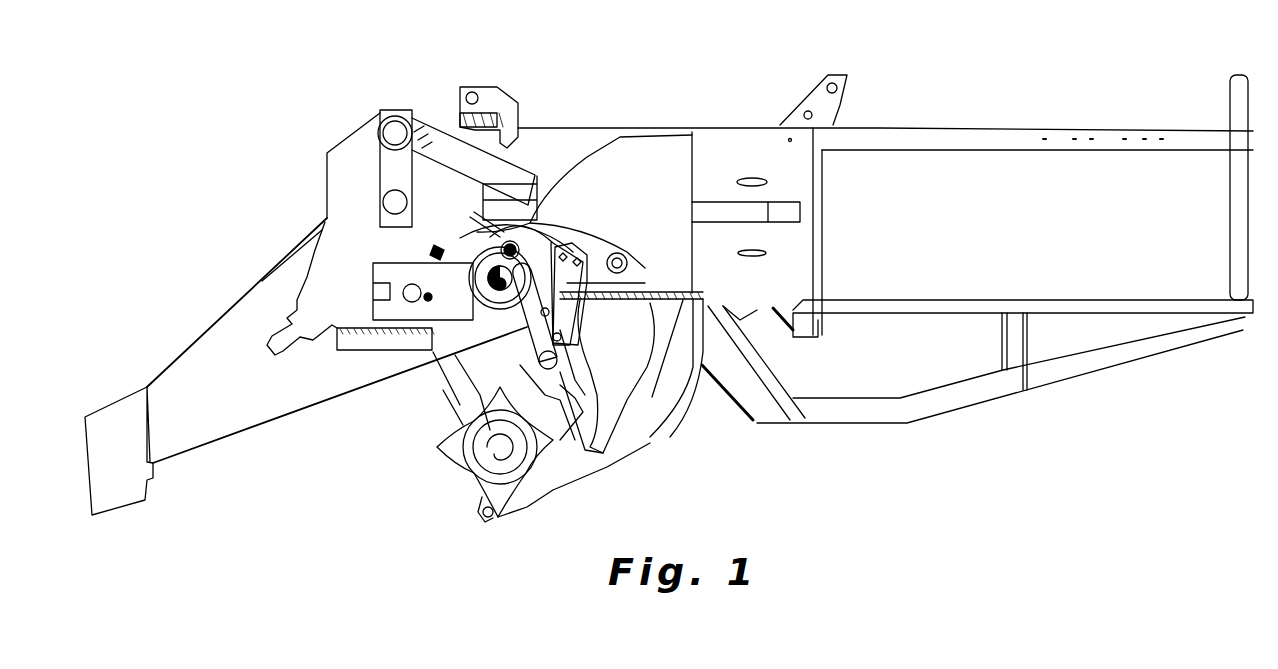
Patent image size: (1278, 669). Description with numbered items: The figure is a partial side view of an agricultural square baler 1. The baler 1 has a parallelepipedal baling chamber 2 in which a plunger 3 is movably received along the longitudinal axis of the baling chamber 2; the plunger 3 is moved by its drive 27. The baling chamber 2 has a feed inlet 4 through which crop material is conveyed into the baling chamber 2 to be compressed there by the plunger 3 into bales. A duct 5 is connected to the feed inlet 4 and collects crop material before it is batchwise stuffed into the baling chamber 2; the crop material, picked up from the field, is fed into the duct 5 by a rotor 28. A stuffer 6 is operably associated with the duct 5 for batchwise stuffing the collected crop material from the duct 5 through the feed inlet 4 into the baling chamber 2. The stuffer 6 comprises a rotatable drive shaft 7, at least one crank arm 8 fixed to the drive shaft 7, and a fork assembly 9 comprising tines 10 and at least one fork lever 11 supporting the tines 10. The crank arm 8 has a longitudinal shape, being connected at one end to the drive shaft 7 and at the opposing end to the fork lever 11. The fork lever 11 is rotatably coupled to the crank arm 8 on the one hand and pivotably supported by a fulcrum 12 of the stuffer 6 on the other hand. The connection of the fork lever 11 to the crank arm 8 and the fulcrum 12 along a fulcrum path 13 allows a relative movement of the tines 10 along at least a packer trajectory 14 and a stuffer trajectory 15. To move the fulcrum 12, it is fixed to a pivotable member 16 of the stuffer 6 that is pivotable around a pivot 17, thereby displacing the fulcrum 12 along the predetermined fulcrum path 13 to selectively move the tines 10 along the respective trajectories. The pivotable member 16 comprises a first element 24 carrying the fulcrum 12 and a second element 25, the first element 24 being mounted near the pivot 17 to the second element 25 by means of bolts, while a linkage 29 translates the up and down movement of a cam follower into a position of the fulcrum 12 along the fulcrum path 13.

The agricultural square baler 1 is at (938, 72).
The baling chamber 2 is at (1055, 112).
The plunger 3 is at (652, 158).
The feed inlet 4 is at (706, 288).
The duct 5 is at (577, 467).
The stuffer 6 is at (593, 336).
The drive shaft 7 is at (520, 262).
The crank arm 8 is at (516, 243).
The fork assembly 9 is at (582, 322).
The tines 10 is at (568, 398).
The fork lever 11 is at (580, 338).
The fulcrum 12 is at (527, 324).
The fulcrum path 13 is at (534, 272).
The packer trajectory 14 is at (677, 368).
The stuffer trajectory 15 is at (684, 410).
The pivotable member 16 is at (602, 250).
The pivot 17 is at (629, 259).
The first element 24 is at (568, 281).
The second element 25 is at (497, 230).
The drive 27 is at (436, 92).
The rotor 28 is at (526, 494).
The linkage 29 is at (489, 200).